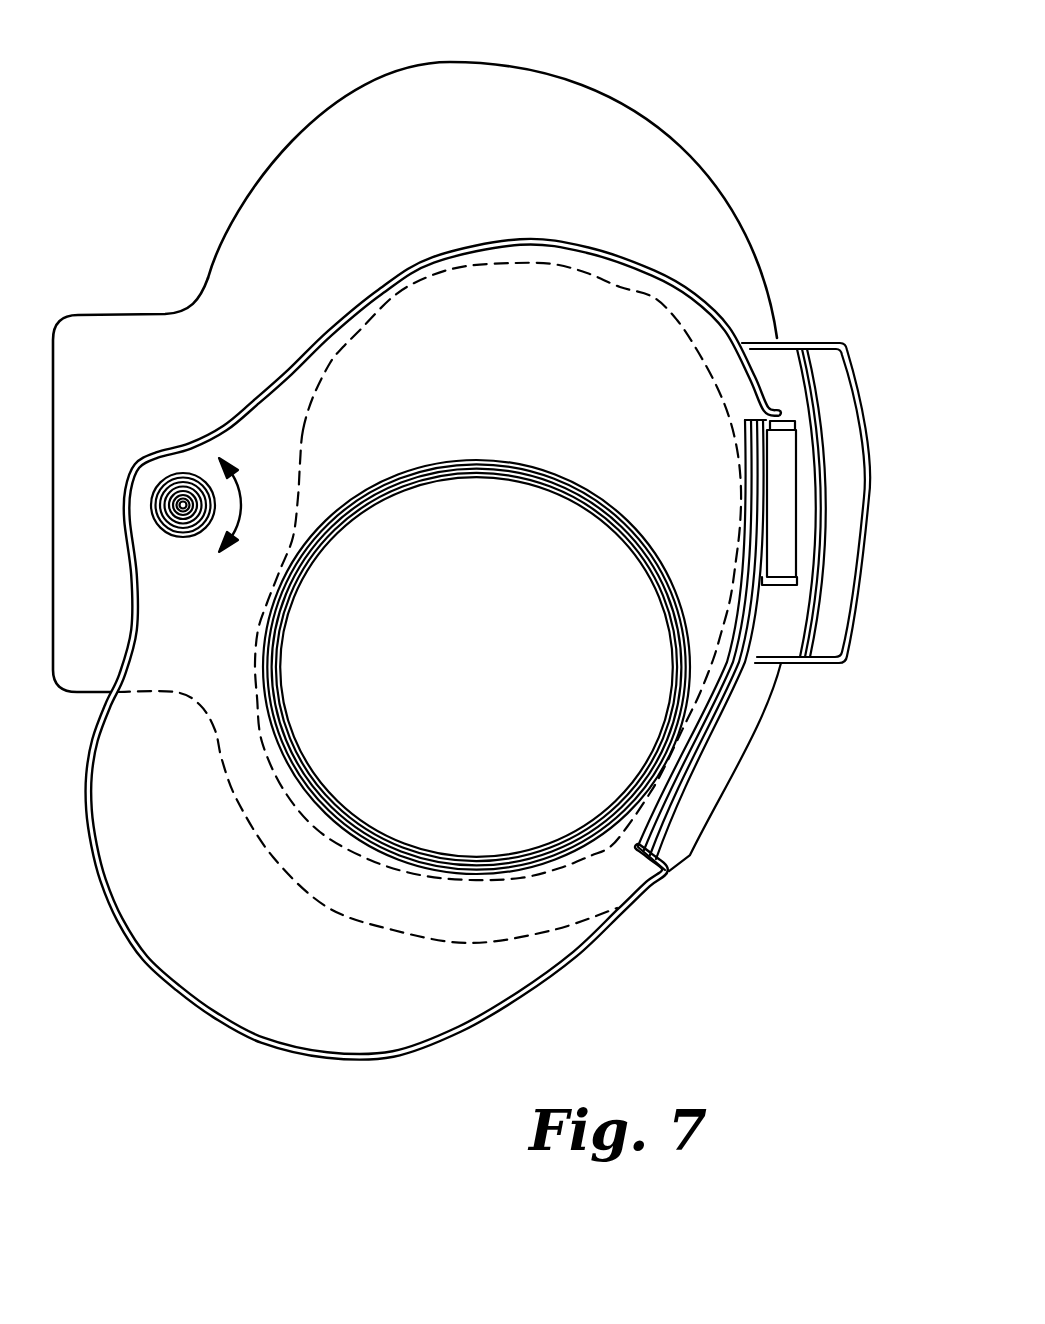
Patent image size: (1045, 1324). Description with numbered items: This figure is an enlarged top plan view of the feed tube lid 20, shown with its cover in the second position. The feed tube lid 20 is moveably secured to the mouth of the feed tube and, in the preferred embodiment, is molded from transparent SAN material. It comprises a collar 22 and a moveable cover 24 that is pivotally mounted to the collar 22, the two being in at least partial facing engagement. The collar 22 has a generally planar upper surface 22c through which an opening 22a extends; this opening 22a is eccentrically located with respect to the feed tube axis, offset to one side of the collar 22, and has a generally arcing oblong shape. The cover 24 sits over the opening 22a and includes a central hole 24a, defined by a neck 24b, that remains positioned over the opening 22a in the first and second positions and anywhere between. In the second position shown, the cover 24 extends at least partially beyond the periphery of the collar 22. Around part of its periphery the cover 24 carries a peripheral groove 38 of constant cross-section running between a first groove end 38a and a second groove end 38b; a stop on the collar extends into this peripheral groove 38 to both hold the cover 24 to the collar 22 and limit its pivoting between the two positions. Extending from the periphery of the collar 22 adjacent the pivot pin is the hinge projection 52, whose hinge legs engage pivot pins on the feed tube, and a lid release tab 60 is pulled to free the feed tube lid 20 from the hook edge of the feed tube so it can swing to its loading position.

The feed tube lid 20 is at (483, 542).
The collar 22 is at (640, 104).
The opening 22a is at (653, 297).
The upper surface 22c is at (473, 130).
The cover 24 is at (510, 660).
The central hole 24a is at (547, 825).
The neck 24b is at (653, 762).
The peripheral groove 38 is at (758, 710).
The first groove end 38a is at (653, 851).
The second groove end 38b is at (783, 437).
The hinge projection 52 is at (128, 304).
The lid release tab 60 is at (840, 508).